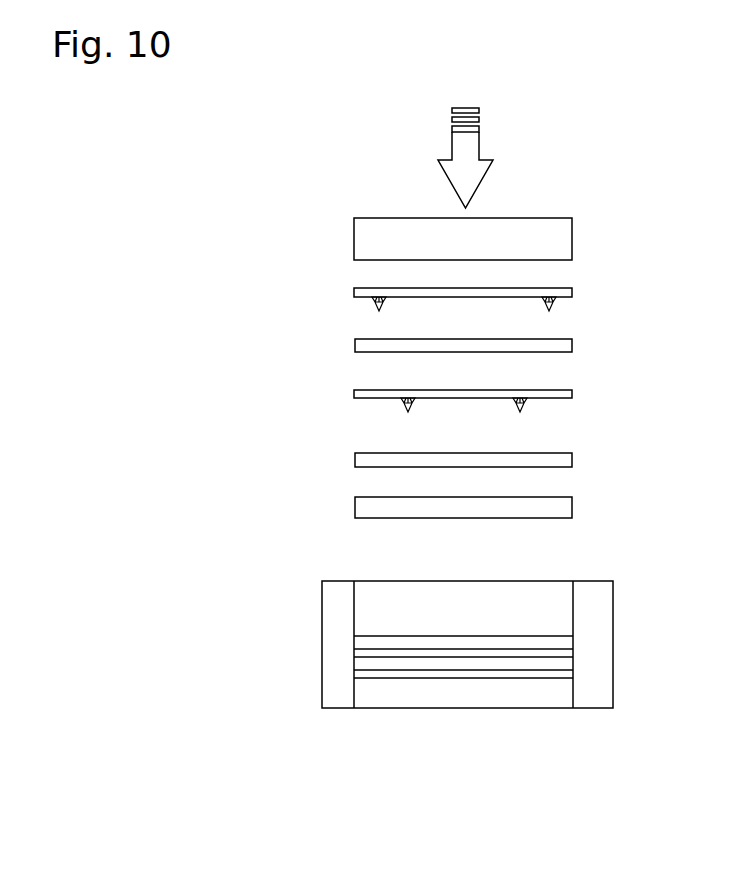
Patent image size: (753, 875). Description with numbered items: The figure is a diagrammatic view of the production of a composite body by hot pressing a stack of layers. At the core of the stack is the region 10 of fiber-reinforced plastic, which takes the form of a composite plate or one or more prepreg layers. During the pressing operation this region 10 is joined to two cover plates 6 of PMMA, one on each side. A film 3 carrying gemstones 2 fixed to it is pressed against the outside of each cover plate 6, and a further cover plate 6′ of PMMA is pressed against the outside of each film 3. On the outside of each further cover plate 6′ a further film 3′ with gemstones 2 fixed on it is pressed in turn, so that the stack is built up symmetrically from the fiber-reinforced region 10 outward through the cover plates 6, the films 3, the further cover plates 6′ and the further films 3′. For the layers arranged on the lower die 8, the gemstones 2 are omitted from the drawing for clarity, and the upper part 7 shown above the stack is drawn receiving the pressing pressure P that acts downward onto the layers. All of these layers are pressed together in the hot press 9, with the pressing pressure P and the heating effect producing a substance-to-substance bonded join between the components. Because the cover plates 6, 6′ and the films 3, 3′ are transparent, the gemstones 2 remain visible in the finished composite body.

The pressing pressure P is at (474, 156).
The press plate 7 is at (553, 236).
The further film 3′ is at (562, 293).
The gemstones 2 is at (555, 303).
The further cover plate 6′ is at (372, 343).
The film 3 is at (562, 394).
The cover plate 6 is at (368, 461).
The fiber-reinforced region 10 is at (383, 511).
The lower die 8 is at (550, 698).
The hot press 9 is at (341, 689).